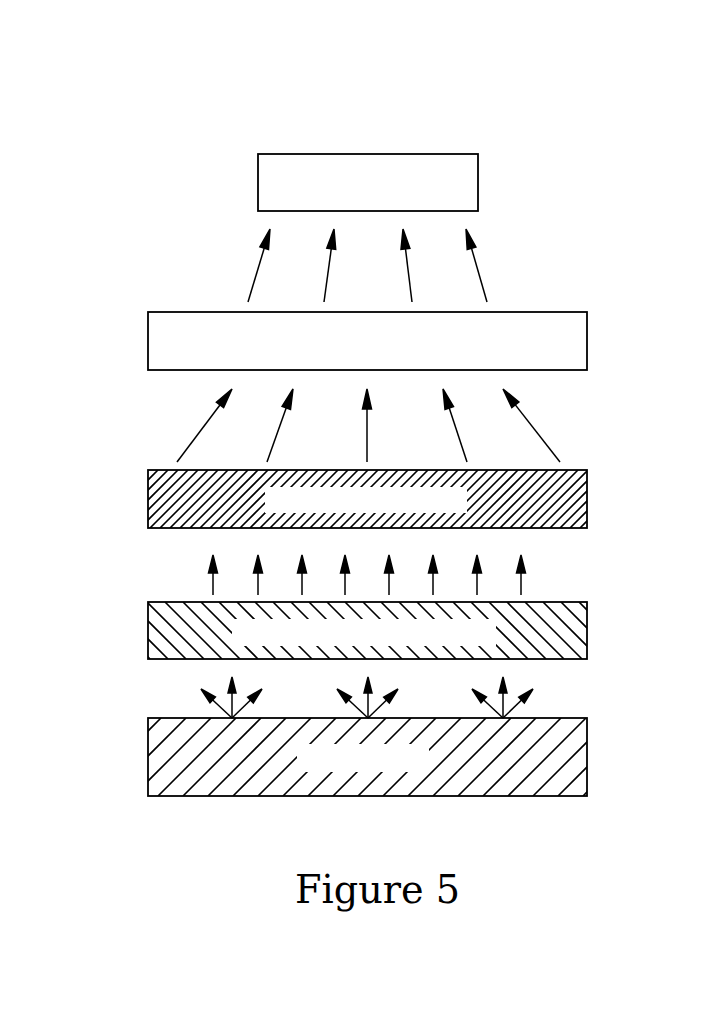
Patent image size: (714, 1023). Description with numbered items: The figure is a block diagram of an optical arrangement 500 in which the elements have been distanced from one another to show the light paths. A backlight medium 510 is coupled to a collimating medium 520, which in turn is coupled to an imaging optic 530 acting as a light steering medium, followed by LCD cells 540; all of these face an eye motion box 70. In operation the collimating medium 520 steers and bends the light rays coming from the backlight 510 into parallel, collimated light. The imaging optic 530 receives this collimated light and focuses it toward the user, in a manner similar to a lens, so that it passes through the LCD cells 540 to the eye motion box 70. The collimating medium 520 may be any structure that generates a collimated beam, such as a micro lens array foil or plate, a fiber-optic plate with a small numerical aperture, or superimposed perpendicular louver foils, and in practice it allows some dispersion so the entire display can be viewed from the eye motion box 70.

The optical arrangement 500 is at (102, 48).
The eye motion box 70 is at (258, 181).
The LCD cells 540 is at (148, 340).
The imaging optic 530 is at (148, 500).
The collimating medium 520 is at (148, 630).
The backlight medium 510 is at (148, 745).